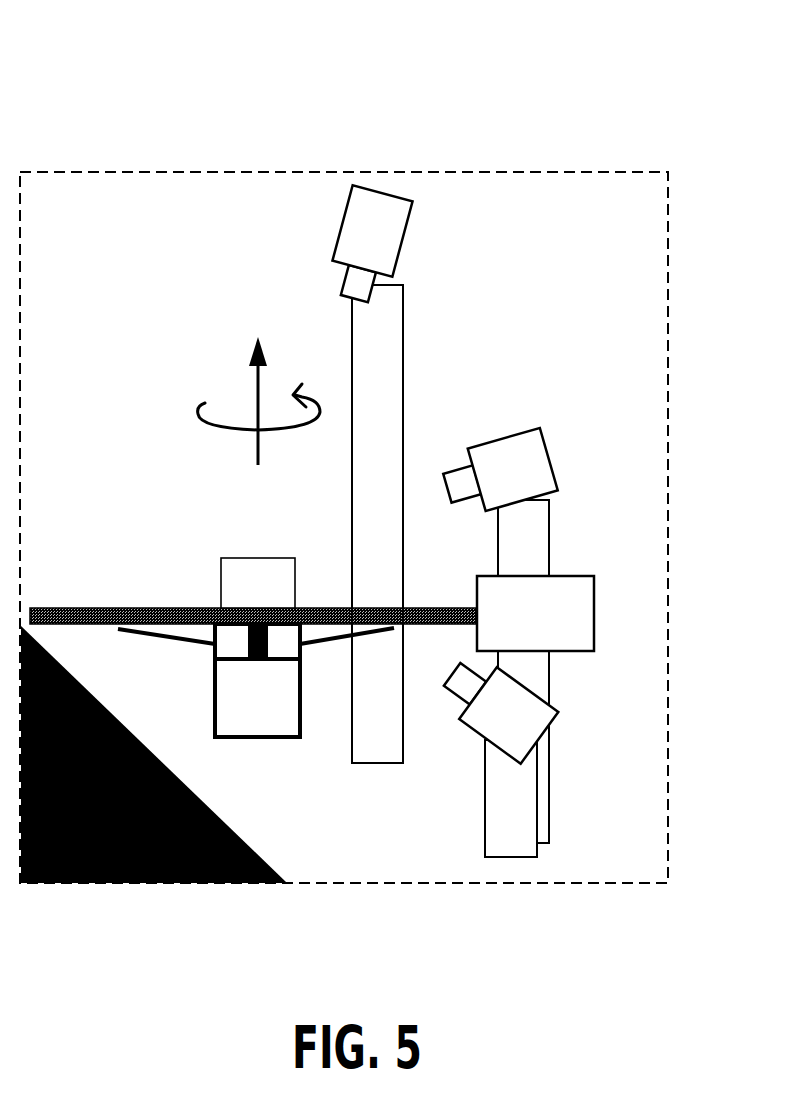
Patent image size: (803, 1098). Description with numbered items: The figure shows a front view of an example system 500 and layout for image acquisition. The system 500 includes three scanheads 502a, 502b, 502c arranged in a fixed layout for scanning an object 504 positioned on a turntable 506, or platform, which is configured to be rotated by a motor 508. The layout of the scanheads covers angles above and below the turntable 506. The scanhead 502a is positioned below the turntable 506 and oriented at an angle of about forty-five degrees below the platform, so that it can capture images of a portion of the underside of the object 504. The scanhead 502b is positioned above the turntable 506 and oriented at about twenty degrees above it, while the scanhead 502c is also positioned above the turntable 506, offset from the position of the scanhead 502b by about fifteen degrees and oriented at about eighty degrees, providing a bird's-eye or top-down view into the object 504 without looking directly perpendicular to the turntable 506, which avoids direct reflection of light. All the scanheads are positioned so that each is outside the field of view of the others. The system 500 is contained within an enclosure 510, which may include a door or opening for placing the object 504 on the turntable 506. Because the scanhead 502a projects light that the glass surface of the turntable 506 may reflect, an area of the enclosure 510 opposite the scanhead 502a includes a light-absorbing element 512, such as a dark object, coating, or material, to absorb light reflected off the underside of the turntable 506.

The system 500 is at (92, 78).
The scanhead 502a is at (495, 752).
The scanhead 502b is at (497, 635).
The scanhead 502c is at (412, 223).
The object 504 is at (275, 595).
The turntable 506 is at (172, 607).
The motor 508 is at (595, 612).
The enclosure 510 is at (437, 171).
The light-absorbing element 512 is at (109, 710).